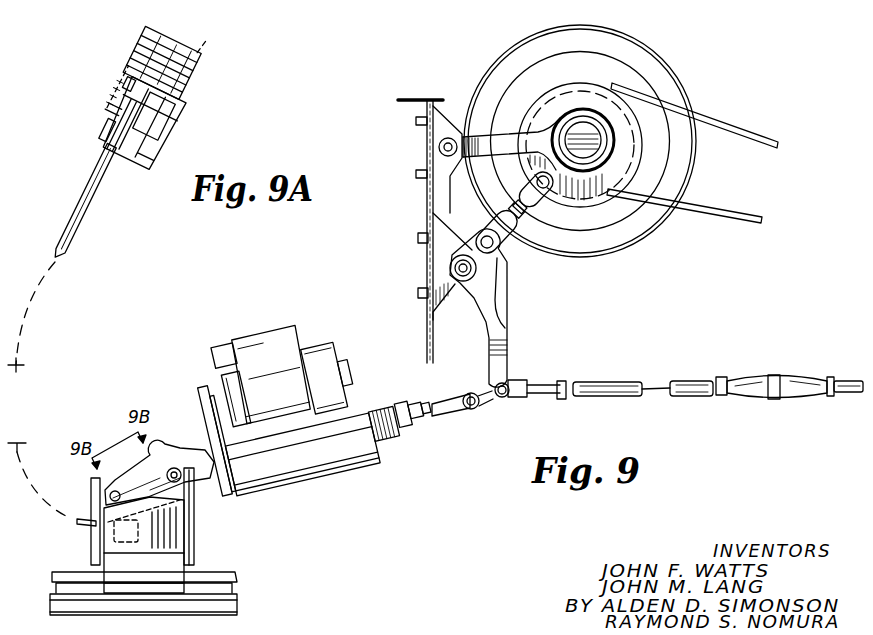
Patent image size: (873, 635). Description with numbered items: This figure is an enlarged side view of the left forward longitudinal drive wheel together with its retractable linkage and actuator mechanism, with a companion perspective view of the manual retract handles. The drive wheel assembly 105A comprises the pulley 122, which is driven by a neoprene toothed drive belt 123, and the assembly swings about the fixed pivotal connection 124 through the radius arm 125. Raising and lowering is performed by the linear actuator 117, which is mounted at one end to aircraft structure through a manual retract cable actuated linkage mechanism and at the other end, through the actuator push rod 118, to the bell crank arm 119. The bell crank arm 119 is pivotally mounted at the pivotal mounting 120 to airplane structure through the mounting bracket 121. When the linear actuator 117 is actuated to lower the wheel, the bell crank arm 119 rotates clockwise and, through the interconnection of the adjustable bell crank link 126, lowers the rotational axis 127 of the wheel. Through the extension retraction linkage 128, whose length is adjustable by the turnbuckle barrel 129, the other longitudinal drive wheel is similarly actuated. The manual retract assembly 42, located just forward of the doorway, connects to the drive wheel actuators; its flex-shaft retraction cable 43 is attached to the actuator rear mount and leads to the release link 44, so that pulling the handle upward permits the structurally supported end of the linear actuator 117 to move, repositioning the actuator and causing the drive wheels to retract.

In FIG. 9A, the manual retract assembly 42 is at (163, 40).
In FIG. 9A, the retraction cable 43 is at (75, 220).
In FIG. 9, the retraction cable 43 is at (82, 527).
In FIG. 9, the release link 44 is at (200, 495).
In FIG. 9, the drive wheel assembly 105A is at (628, 52).
In FIG. 9, the linear actuator 117 is at (346, 462).
In FIG. 9, the actuator push rod 118 is at (447, 398).
In FIG. 9, the bell crank arm 119 is at (509, 347).
In FIG. 9, the pivotal mounting 120 is at (448, 267).
In FIG. 9, the mounting bracket 121 is at (440, 125).
In FIG. 9, the pulley 122 is at (550, 100).
In FIG. 9, the neoprene toothed drive belt 123 is at (738, 132).
In FIG. 9, the fixed pivotal connection 124 is at (440, 147).
In FIG. 9, the radius arm 125 is at (497, 130).
In FIG. 9, the adjustable bell crank link 126 is at (507, 252).
In FIG. 9, the rotational axis 127 is at (596, 155).
In FIG. 9, the extension retraction linkage 128 is at (607, 384).
In FIG. 9, the turnbuckle barrel 129 is at (752, 396).